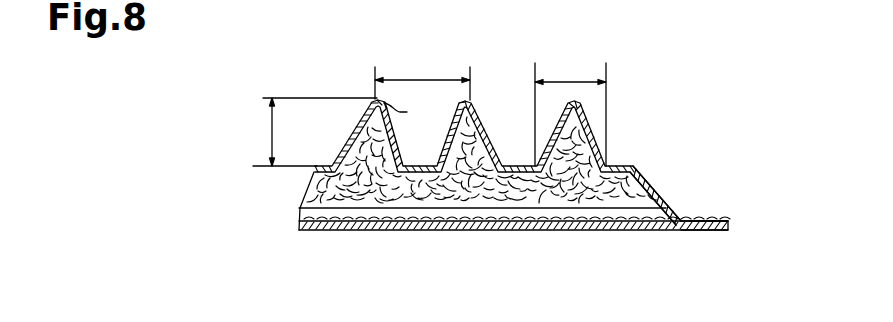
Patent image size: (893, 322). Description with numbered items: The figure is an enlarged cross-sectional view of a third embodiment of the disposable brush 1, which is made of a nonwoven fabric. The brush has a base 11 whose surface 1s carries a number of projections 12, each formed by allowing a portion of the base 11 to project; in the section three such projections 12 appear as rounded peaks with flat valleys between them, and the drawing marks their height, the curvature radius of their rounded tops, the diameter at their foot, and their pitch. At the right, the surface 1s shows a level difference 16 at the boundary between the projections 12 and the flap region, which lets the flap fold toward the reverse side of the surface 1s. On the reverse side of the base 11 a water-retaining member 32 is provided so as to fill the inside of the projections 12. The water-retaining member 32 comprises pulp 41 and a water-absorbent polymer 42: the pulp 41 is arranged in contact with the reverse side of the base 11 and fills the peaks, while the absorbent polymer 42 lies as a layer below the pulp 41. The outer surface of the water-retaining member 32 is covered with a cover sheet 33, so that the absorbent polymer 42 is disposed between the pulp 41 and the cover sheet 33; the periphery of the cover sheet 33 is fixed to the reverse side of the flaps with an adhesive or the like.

The disposable brush 1 is at (647, 134).
The surface of the base 1s is at (712, 221).
The base 11 is at (646, 178).
The projections 12 is at (484, 113).
The level difference 16 is at (668, 204).
The water-retaining member 32 is at (250, 180).
The cover sheet 33 is at (583, 232).
The pulp 41 is at (303, 187).
The water-absorbent polymer 42 is at (300, 216).